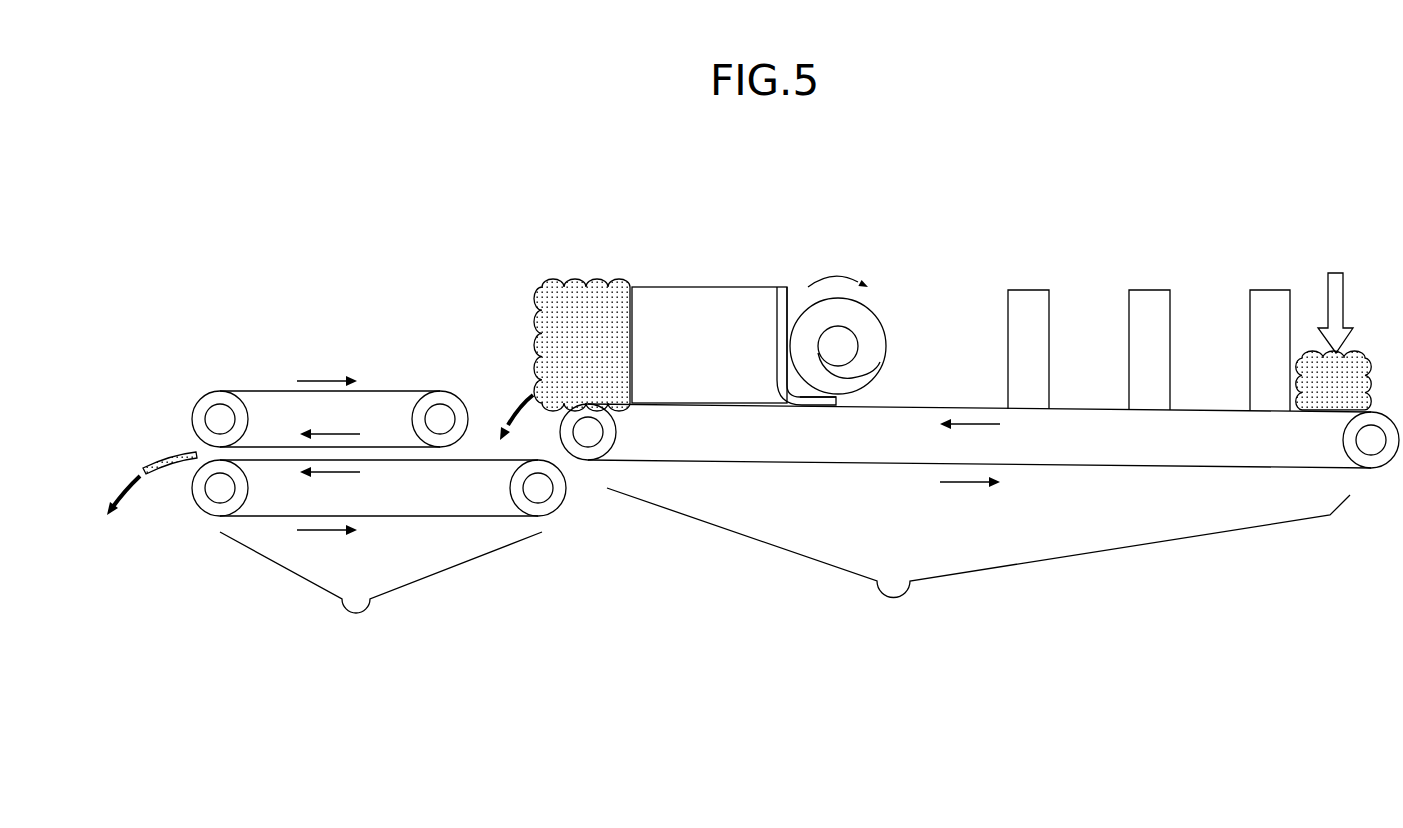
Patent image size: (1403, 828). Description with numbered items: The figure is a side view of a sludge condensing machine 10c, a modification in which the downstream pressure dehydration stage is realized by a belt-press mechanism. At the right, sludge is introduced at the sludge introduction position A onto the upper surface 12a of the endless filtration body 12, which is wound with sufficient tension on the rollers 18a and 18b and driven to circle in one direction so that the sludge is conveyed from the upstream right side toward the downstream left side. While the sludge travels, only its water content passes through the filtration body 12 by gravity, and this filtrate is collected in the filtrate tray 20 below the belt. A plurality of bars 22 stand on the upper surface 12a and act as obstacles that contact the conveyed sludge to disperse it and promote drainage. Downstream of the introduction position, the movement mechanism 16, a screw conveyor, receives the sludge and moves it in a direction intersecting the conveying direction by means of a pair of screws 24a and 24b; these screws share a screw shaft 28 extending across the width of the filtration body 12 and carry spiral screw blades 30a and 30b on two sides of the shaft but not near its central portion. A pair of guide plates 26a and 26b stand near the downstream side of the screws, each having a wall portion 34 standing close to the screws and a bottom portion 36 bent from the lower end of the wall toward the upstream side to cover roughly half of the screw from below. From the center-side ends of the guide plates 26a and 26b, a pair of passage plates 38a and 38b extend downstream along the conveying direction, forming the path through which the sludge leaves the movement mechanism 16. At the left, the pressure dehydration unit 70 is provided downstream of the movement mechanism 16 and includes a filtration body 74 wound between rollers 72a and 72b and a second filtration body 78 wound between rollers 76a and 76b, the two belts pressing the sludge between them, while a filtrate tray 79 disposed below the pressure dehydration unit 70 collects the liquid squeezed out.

The sludge condensing machine 10c is at (281, 260).
The filtration body 12 is at (1086, 471).
The upper surface of filtration body 12a is at (918, 405).
The movement mechanism 16 is at (818, 201).
The roller 18a is at (1370, 458).
The roller 18b is at (588, 463).
The filtrate tray 20 is at (1043, 563).
The bar 22 is at (1028, 295).
The screw 24a is at (876, 265).
The screw 24b is at (862, 294).
The guide plate 26a is at (777, 322).
The guide plate 26b is at (777, 293).
The screw shaft 28 is at (837, 347).
The screw blade 30a is at (807, 362).
The screw blade 30b is at (796, 439).
The wall portion 34 is at (775, 315).
The bottom portion 36 is at (812, 400).
The passage plate 38a is at (670, 307).
The passage plate 38b is at (708, 308).
The pressure dehydration unit 70 is at (366, 298).
The roller 72a is at (443, 403).
The roller 72b is at (222, 398).
The filtration body 74 is at (383, 390).
The roller 76a is at (548, 497).
The roller 76b is at (208, 503).
The filtration body 78 is at (385, 520).
The filtrate tray 79 is at (493, 565).
The sludge introduction position A is at (1335, 297).